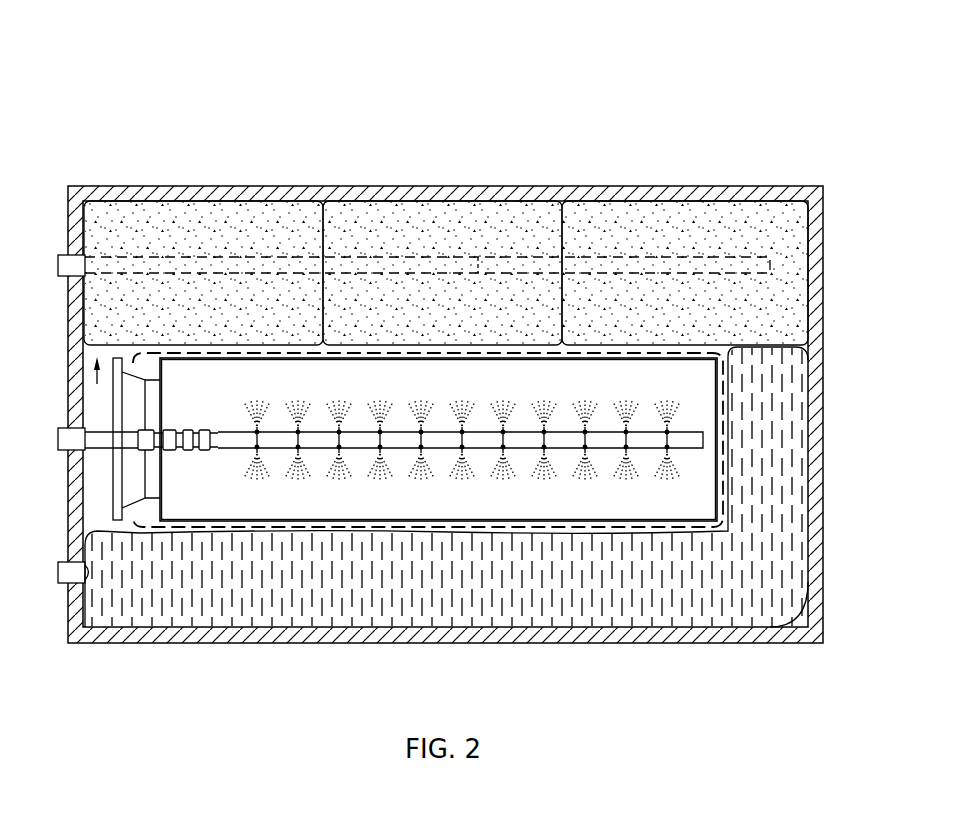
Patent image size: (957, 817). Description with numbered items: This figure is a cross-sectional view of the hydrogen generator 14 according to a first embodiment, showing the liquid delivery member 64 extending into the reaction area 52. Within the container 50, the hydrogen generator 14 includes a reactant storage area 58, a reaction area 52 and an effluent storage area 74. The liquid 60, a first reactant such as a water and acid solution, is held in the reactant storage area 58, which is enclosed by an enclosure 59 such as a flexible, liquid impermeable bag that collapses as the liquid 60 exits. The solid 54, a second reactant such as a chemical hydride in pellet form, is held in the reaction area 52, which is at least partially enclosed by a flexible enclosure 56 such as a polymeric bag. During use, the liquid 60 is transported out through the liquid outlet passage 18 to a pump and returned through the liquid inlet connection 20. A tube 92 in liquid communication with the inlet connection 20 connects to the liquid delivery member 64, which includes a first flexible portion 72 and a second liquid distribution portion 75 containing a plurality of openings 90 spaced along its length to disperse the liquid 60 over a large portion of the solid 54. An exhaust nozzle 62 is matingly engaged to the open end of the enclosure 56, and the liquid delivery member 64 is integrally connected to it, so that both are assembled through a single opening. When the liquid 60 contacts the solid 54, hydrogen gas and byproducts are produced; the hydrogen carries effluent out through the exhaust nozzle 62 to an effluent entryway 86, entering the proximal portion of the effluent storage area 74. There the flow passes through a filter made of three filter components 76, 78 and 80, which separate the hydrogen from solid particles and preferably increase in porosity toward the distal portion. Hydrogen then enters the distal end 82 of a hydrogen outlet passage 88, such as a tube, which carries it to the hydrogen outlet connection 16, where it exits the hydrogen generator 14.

The hydrogen generator 14 is at (183, 78).
The hydrogen outlet connection 16 is at (65, 268).
The liquid outlet passage 18 is at (63, 570).
The liquid inlet connection 20 is at (63, 437).
The container 50 is at (752, 186).
The reaction area 52 is at (192, 503).
The solid 54 is at (240, 503).
The enclosure 56 is at (267, 528).
The reactant storage area 58 is at (515, 607).
The enclosure 59 is at (806, 622).
The liquid 60 is at (590, 602).
The exhaust nozzle 62 is at (117, 488).
The liquid delivery member 64 is at (693, 420).
The first flexible portion 72 is at (207, 430).
The effluent storage area 74 is at (140, 212).
The second liquid distribution portion 75 is at (440, 437).
The filter component 76 is at (212, 201).
The filter component 78 is at (420, 220).
The filter component 80 is at (660, 218).
The distal end 82 is at (787, 259).
The effluent entryway 86 is at (97, 383).
The hydrogen outlet passage 88 is at (478, 257).
The openings 90 is at (588, 435).
The tube 92 is at (100, 441).